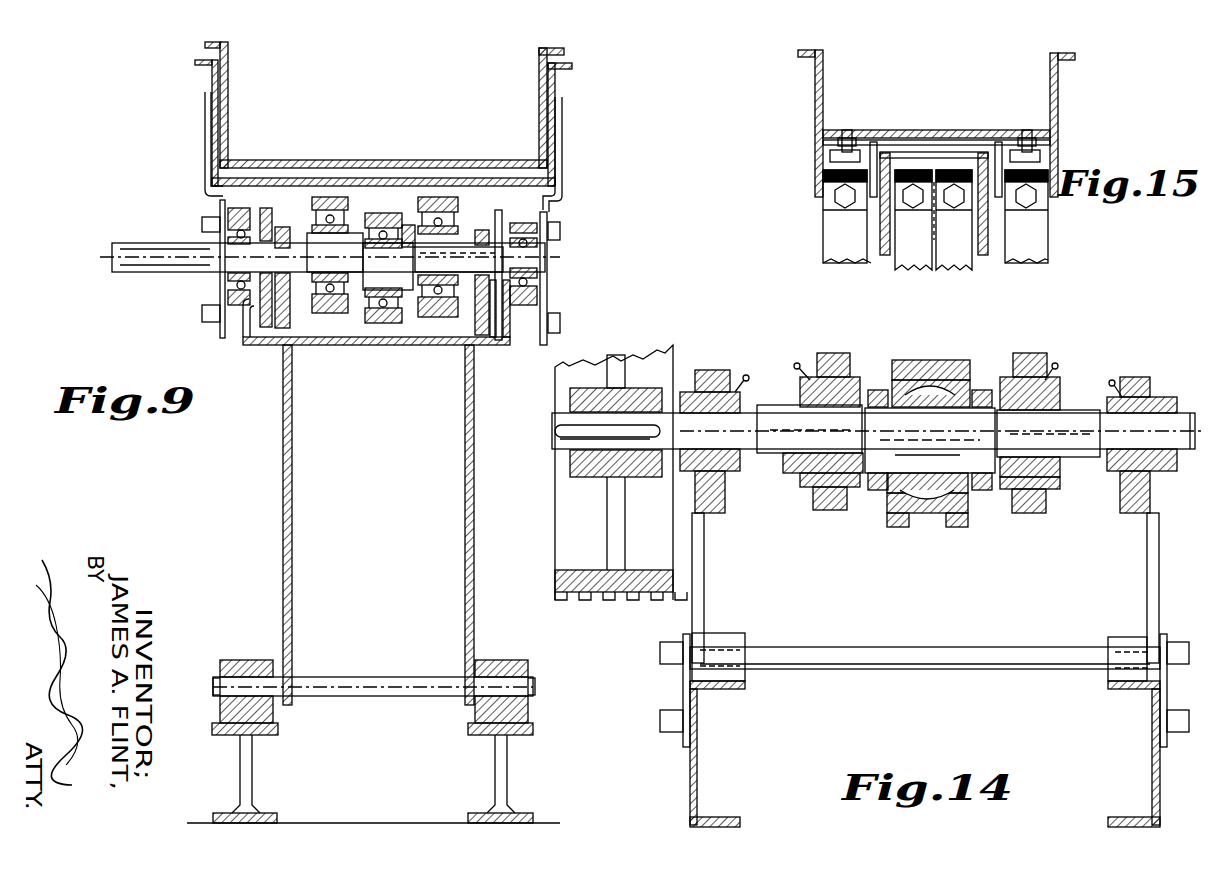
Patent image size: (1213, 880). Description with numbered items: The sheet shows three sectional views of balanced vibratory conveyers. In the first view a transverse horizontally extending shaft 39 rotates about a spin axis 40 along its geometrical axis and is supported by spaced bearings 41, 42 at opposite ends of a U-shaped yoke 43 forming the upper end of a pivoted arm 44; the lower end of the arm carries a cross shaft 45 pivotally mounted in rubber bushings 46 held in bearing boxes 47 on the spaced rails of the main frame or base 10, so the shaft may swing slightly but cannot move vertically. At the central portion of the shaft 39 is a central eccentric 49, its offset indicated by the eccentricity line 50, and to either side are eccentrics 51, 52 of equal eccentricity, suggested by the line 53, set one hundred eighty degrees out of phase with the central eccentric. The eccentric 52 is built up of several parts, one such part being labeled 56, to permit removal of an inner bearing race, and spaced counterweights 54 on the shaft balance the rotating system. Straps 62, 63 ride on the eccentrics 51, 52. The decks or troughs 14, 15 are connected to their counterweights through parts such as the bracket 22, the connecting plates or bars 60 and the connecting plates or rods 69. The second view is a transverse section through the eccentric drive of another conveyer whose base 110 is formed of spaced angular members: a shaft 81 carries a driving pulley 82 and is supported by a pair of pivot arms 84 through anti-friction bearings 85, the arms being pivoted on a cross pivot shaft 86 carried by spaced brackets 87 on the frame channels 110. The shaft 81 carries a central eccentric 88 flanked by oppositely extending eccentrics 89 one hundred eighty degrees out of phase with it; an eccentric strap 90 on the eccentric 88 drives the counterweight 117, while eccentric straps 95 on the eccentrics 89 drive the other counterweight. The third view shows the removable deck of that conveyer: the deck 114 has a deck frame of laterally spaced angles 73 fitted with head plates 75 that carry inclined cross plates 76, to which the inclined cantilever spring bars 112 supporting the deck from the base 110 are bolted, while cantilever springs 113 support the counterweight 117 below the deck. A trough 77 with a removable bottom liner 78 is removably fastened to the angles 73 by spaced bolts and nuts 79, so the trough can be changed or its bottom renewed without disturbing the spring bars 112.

In FIG. 9, the main frame or base 10 is at (488, 782).
In FIG. 9, the deck or trough 14 is at (538, 66).
In FIG. 9, the deck or trough 15 is at (556, 112).
In FIG. 9, the bracket 22 is at (205, 120).
In FIG. 9, the shaft 39 is at (168, 272).
In FIG. 9, the spin axis 40 is at (112, 258).
In FIG. 9, the bearing 41 is at (210, 318).
In FIG. 9, the bearing 42 is at (548, 300).
In FIG. 9, the U-shaped yoke 43 is at (366, 346).
In FIG. 9, the pivoted arm 44 is at (282, 484).
In FIG. 9, the cross shaft 45 is at (360, 686).
In FIG. 9, the rubber bushings 46 is at (216, 676).
In FIG. 9, the bearing boxes 47 is at (238, 660).
In FIG. 9, the central eccentric 49 is at (410, 346).
In FIG. 9, the eccentricity line 50 is at (343, 345).
In FIG. 9, the eccentric 51 is at (298, 228).
In FIG. 9, the eccentric 52 is at (482, 230).
In FIG. 9, the eccentricity line 53 is at (355, 210).
In FIG. 9, the counterweights 54 is at (258, 345).
In FIG. 9, the retaining ring 56 is at (407, 224).
In FIG. 9, the connecting plates or bars 60 is at (228, 214).
In FIG. 9, the strap 62 is at (322, 198).
In FIG. 9, the strap 63 is at (440, 198).
In FIG. 9, the connecting plates or rods 69 is at (220, 206).
In FIG. 15, the angles 73 is at (823, 185).
In FIG. 15, the head plates 75 is at (990, 160).
In FIG. 15, the inclined cross plates 76 is at (845, 160).
In FIG. 15, the trough 77 is at (1060, 90).
In FIG. 15, the removable bottom liner 78 is at (1000, 158).
In FIG. 15, the bolts and nuts 79 is at (848, 130).
In FIG. 14, the shaft 81 is at (555, 432).
In FIG. 14, the driving pulley 82 is at (632, 595).
In FIG. 14, the pivot arms 84 is at (705, 600).
In FIG. 14, the anti-friction bearings 85 is at (735, 385).
In FIG. 14, the cross pivot shaft 86 is at (920, 658).
In FIG. 14, the brackets 87 is at (690, 676).
In FIG. 14, the central eccentric 88 is at (965, 455).
In FIG. 14, the eccentric 89 is at (785, 412).
In FIG. 14, the eccentric strap 90 is at (905, 375).
In FIG. 14, the eccentric straps 95 is at (812, 500).
In FIG. 14, the main frame or base 110 is at (712, 760).
In FIG. 15, the cantilever spring means 112 is at (833, 230).
In FIG. 15, the cantilever springs 113 is at (952, 258).
In FIG. 15, the deck 114 is at (800, 79).
In FIG. 15, the counterweight 117 is at (883, 258).